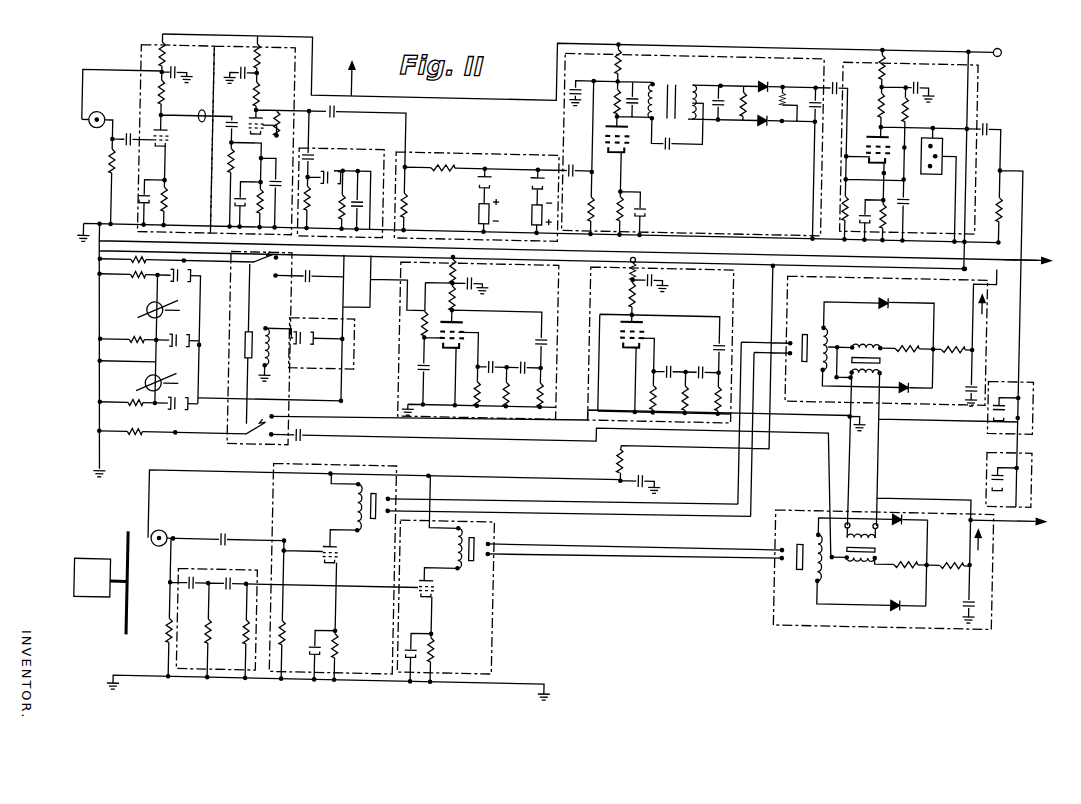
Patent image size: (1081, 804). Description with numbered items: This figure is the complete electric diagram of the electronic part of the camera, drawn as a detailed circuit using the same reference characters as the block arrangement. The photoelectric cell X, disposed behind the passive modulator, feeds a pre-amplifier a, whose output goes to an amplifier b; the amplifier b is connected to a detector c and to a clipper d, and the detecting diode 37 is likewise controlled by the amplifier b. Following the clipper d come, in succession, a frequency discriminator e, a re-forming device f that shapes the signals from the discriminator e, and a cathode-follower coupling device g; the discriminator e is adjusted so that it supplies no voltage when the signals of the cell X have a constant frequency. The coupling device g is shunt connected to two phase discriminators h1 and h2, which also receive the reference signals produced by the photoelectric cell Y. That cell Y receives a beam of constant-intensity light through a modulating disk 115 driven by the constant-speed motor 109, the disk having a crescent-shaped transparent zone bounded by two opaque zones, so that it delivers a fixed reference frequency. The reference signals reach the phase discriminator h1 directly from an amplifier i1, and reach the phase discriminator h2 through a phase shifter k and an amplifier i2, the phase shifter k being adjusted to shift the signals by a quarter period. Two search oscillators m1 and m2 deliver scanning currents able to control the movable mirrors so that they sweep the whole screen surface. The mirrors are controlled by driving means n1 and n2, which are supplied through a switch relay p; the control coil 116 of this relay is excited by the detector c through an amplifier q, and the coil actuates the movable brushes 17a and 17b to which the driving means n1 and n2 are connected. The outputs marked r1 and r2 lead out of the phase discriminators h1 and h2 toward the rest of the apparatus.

The detecting diode 37 is at (352, 70).
The modulating disk 115 is at (125, 548).
The control coil 116 is at (271, 361).
The constant-speed motor 109 is at (86, 593).
The movable brush 17a is at (267, 278).
The movable brush 17b is at (256, 446).
The pre-amplifier a is at (136, 58).
The amplifier b is at (296, 61).
The detector c is at (350, 150).
The clipper d is at (470, 150).
The frequency discriminator e is at (558, 62).
The re-forming device f is at (985, 86).
The cathode-follower coupling device g is at (1032, 450).
The phase discriminator h1 is at (988, 313).
The phase discriminator h2 is at (994, 562).
The amplifier i1 is at (398, 471).
The amplifier i2 is at (497, 612).
The phase shifter k is at (184, 650).
The search oscillator m1 is at (583, 316).
The search oscillator m2 is at (647, 339).
The driving means n1 is at (184, 328).
The driving means n2 is at (181, 385).
The switch relay p is at (516, 403).
The amplifier q is at (342, 367).
The first output r1 is at (1028, 251).
The second output r2 is at (1009, 534).
The photoelectric cell X is at (111, 108).
The photoelectric cell Y is at (165, 537).